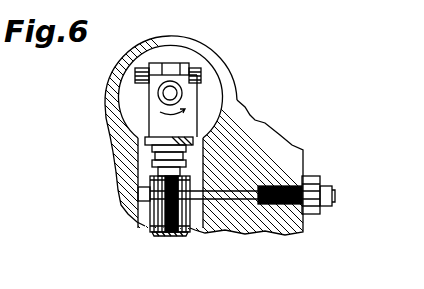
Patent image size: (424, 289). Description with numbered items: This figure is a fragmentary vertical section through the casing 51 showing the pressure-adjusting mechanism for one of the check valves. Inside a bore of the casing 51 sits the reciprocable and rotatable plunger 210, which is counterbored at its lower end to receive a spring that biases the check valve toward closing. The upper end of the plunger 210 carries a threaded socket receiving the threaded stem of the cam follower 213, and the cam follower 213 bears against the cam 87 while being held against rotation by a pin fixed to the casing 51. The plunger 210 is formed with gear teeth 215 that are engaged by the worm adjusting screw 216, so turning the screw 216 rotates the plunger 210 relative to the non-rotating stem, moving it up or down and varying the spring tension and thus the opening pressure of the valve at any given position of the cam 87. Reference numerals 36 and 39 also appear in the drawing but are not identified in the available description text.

The pivot pin 36 is at (163, 95).
The cam 87 is at (188, 99).
The cam follower 213 is at (213, 117).
The casing 51 is at (258, 128).
The worm adjusting screw 216 is at (245, 190).
The plunger 210 is at (165, 238).
The gear teeth 215 is at (178, 238).
The frame 39 is at (6, 113).